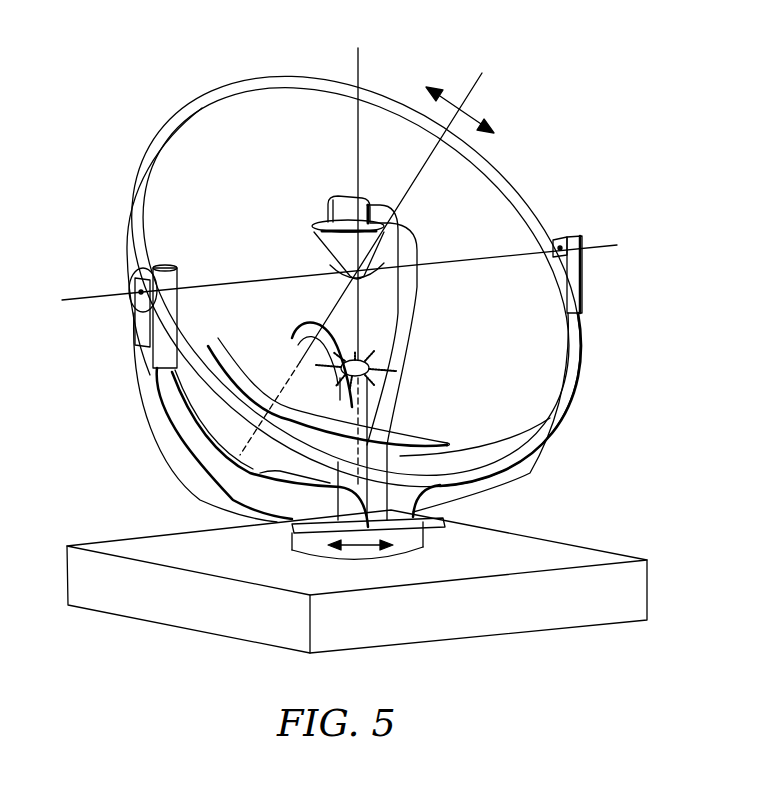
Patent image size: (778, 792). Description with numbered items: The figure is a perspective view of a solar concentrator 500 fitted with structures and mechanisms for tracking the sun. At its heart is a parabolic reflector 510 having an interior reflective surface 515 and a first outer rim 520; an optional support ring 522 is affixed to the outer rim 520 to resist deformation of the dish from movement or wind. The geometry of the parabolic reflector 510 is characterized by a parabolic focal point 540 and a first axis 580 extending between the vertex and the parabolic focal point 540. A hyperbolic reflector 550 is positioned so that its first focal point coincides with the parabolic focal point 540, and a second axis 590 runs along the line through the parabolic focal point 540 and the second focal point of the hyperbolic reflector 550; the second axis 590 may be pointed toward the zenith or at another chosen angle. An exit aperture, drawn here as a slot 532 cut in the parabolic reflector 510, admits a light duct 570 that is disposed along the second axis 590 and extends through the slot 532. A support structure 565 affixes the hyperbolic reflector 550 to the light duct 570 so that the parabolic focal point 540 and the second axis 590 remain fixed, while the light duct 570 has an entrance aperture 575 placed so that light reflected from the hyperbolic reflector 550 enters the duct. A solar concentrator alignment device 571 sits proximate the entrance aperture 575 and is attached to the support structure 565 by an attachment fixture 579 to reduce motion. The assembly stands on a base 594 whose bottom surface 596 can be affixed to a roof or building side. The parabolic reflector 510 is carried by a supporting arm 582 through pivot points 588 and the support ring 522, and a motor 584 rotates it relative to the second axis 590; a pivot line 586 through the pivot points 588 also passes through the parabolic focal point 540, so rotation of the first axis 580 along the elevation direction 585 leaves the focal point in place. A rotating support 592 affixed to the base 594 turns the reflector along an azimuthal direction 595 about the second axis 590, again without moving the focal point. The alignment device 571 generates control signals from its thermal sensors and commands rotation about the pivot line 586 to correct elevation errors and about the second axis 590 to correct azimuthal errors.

The solar concentrator 500 is at (118, 46).
The parabolic reflector 510 is at (128, 237).
The interior reflective surface 515 is at (492, 202).
The first outer rim 520 is at (183, 122).
The support ring 522 is at (130, 203).
The exit aperture (slot) 532 is at (418, 436).
The parabolic focal point 540 is at (332, 262).
The hyperbolic reflector 550 is at (316, 231).
The support structure 565 is at (408, 286).
The light duct 570 is at (365, 383).
The solar concentrator alignment device 571 is at (292, 338).
The entrance aperture 575 is at (368, 357).
The attachment fixture 579 is at (396, 370).
The first axis 580 is at (478, 81).
The supporting arm 582 is at (152, 418).
The motor 584 is at (160, 340).
The elevation direction 585 is at (470, 113).
The pivot line 586 is at (598, 245).
The pivot points 588 is at (140, 290).
The second axis 590 is at (360, 62).
The rotating support 592 is at (455, 535).
The base 594 is at (638, 585).
The azimuthal direction 595 is at (365, 550).
The bottom surface 596 is at (598, 630).